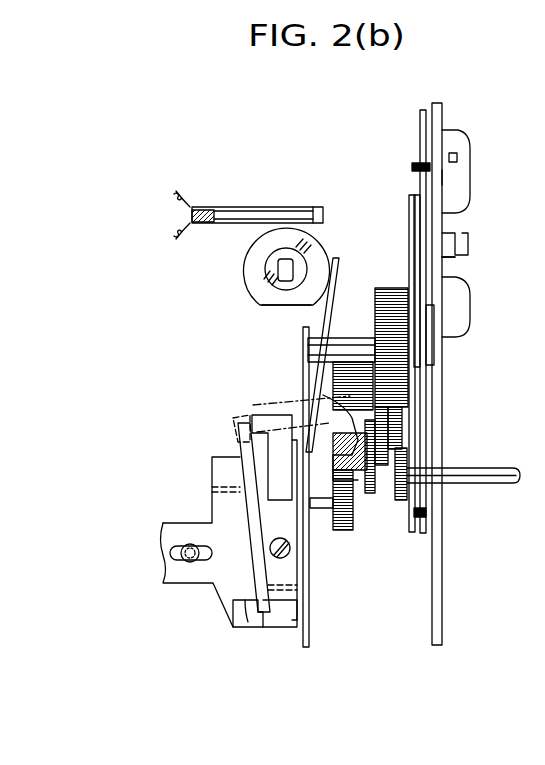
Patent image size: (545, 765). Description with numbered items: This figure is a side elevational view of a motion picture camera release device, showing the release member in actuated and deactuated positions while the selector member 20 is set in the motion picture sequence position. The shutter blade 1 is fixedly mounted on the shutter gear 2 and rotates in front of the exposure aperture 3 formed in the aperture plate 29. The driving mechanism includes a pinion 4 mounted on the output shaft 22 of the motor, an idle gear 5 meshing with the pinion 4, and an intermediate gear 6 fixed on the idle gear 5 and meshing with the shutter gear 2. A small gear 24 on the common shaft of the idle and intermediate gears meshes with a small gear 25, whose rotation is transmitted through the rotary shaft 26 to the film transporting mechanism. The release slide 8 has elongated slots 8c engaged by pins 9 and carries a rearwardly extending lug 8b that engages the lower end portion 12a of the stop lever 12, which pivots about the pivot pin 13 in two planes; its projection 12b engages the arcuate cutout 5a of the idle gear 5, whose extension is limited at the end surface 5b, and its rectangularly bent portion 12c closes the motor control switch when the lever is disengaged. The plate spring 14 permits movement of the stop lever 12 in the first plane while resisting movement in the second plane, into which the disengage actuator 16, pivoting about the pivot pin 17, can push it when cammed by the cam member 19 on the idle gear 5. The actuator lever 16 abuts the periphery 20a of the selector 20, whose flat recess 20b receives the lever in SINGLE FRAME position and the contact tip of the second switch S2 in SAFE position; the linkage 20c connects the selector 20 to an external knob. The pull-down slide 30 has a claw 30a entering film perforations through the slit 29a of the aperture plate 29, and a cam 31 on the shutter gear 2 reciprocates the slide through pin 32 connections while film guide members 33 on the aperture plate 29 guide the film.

The second switch S2 is at (250, 203).
The shutter blade 1 is at (411, 198).
The shutter gear 2 is at (396, 303).
The exposure aperture 3 is at (442, 258).
The pinion 4 is at (343, 531).
The idle gear 5 is at (372, 465).
The arcuate cutout 5a is at (332, 383).
The end surface of cutout 5b is at (358, 468).
The intermediate gear 6 is at (402, 417).
The release slide 8 is at (213, 575).
The lug 8b is at (250, 620).
The elongated slot 8c is at (177, 568).
The pin 9 is at (190, 548).
The stop lever 12 is at (272, 422).
The lower end portion of stop lever 12a is at (258, 598).
The projection 12b is at (343, 427).
The rectangularly bent portion 12c is at (250, 417).
The pivot pin 13 is at (290, 553).
The plate spring 14 is at (283, 608).
The disengage actuator 16 is at (340, 270).
The pivot pin 17 is at (352, 348).
The cam member 19 is at (265, 450).
The selector member 20 is at (250, 267).
The periphery of selector 20a is at (328, 231).
The flat recess 20b is at (283, 308).
The linkage 20c is at (273, 275).
The output shaft 22 is at (323, 505).
The small gear 24 is at (406, 433).
The small gear 25 is at (406, 452).
The rotary shaft 26 is at (483, 478).
The aperture plate 29 is at (440, 112).
The slit 29a is at (440, 176).
The pull-down slide 30 is at (422, 120).
The claw 30a is at (455, 158).
The cam 31 is at (428, 347).
The pin 32 is at (417, 166).
The film guide member 33 is at (463, 168).